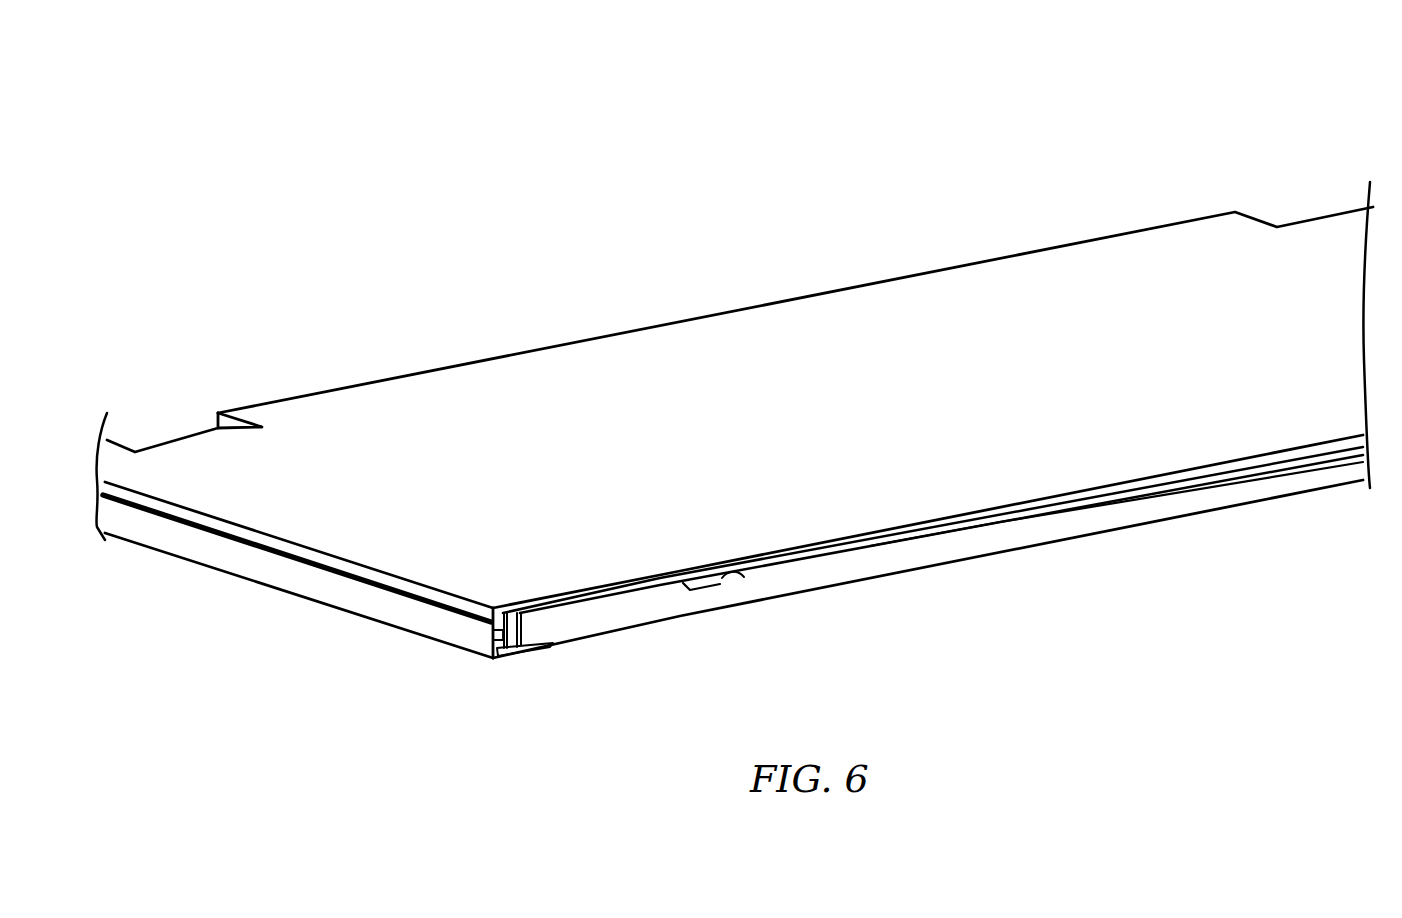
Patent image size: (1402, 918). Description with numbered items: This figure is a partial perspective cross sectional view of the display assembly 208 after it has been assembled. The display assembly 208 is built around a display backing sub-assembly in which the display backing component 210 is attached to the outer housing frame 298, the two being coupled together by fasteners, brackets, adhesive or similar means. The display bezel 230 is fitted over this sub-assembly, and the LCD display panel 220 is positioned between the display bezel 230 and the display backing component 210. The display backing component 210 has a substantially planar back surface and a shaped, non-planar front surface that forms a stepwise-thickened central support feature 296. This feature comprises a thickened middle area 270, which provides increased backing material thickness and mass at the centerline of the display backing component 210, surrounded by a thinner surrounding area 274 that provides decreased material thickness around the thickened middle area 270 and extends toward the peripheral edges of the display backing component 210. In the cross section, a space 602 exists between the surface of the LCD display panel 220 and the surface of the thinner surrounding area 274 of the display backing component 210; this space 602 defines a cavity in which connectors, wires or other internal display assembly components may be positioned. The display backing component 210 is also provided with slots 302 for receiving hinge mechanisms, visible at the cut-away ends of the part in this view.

The display assembly 208 is at (1060, 228).
The display backing component 210 is at (1005, 325).
The slots 302 is at (173, 430).
The outer housing frame 298 is at (370, 592).
The display bezel 230 is at (480, 648).
The LCD display panel 220 is at (596, 623).
The thinner surrounding area 274 is at (785, 553).
The space 602 is at (736, 574).
The thickened middle area 270 is at (1010, 522).
The stepwise-thickened central support feature 296 is at (1118, 490).